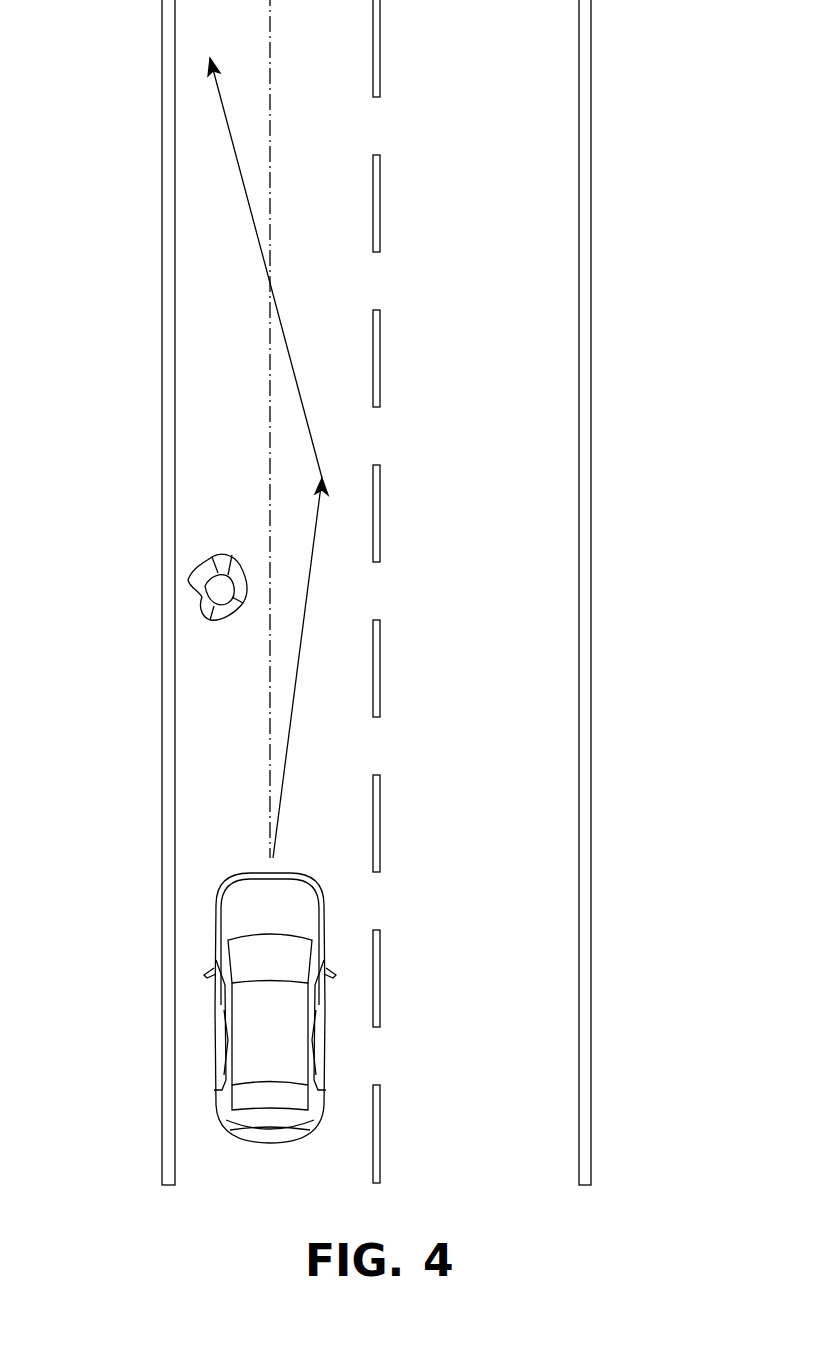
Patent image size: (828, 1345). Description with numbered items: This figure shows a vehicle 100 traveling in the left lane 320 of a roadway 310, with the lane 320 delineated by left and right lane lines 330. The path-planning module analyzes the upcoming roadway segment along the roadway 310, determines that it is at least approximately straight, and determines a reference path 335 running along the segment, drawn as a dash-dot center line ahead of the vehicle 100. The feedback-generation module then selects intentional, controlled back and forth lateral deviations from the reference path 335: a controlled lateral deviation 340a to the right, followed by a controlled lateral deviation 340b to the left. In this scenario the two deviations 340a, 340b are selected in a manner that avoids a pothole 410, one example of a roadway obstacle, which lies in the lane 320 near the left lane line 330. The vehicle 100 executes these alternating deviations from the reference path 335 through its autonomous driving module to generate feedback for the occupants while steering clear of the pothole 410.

The vehicle 100 is at (327, 1042).
The roadway 310 is at (584, 218).
The left lane 320 is at (337, 62).
The lane lines 330 is at (163, 660).
The reference path 335 is at (270, 352).
The controlled lateral deviation 340a is at (295, 690).
The controlled lateral deviation 340b is at (295, 377).
The pothole 410 is at (185, 583).